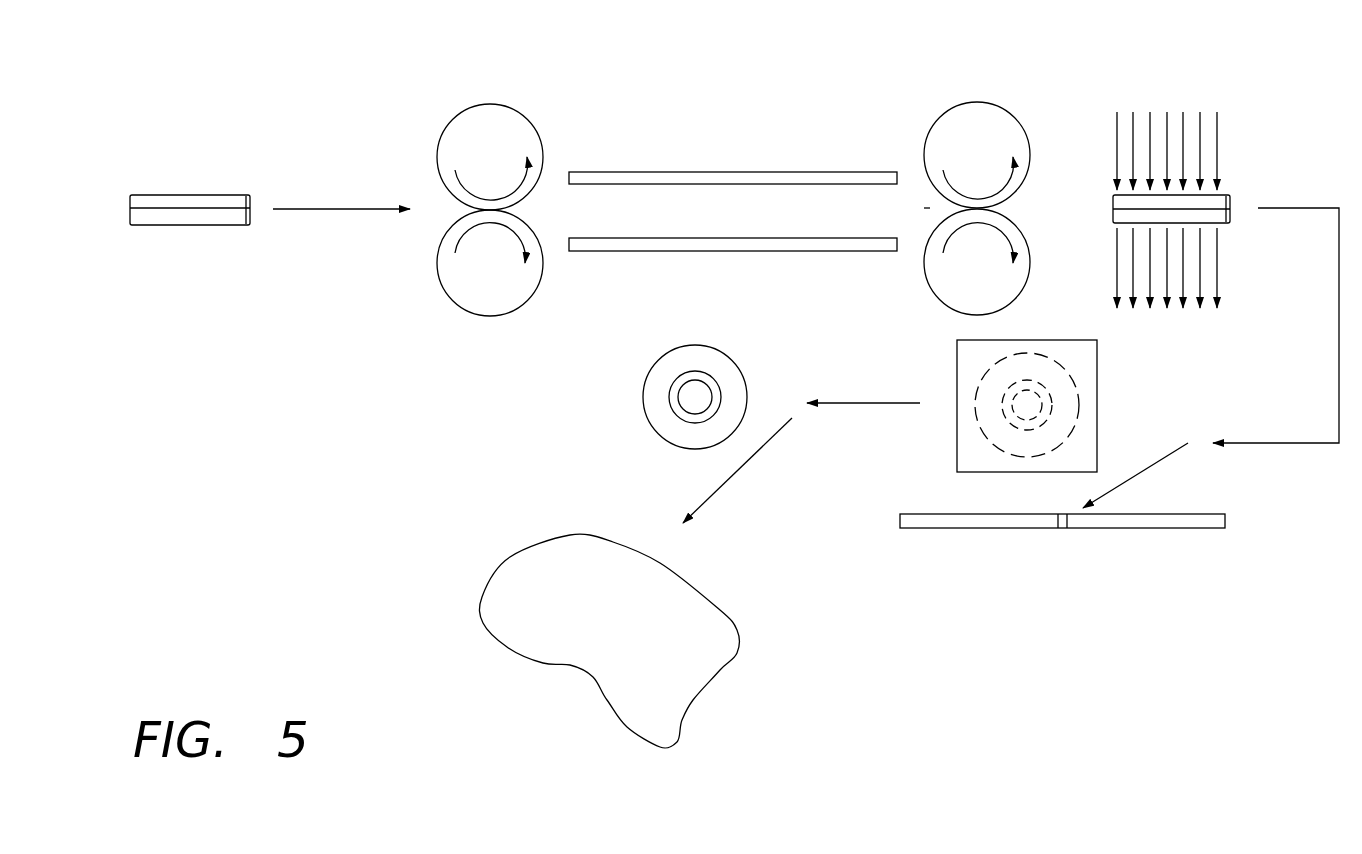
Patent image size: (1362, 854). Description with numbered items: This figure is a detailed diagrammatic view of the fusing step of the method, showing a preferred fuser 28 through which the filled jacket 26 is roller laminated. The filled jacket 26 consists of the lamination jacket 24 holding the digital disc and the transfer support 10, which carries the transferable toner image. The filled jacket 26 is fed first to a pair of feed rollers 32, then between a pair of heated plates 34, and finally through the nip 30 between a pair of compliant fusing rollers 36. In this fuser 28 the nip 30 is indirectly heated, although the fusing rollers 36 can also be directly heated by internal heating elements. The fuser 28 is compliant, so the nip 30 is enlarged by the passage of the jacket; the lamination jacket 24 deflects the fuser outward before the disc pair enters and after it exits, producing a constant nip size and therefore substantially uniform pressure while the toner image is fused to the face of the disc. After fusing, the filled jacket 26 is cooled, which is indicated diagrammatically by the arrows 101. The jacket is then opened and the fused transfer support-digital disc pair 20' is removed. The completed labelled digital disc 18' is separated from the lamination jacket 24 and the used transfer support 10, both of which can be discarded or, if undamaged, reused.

The transfer support 10 is at (740, 638).
The completed labelled digital disc 18' is at (736, 384).
The fused transfer support-digital disc pair 20' is at (1075, 406).
The lamination jacket 24 is at (1083, 528).
The filled jacket 26 is at (188, 195).
The fuser 28 is at (719, 158).
The nip 30 is at (948, 207).
The feed rollers 32 is at (477, 312).
The heated plates 34 is at (648, 252).
The compliant fusing rollers 36 is at (927, 278).
The arrows 101 is at (1217, 145).